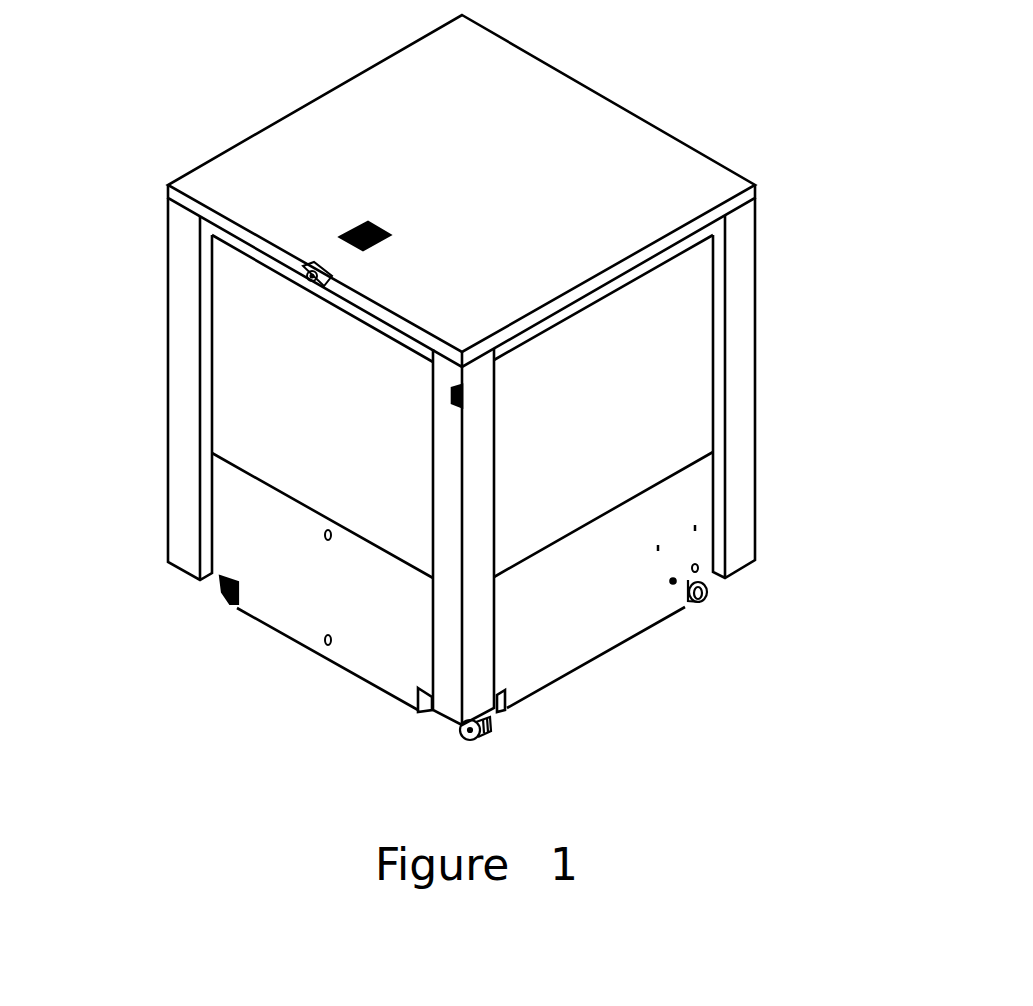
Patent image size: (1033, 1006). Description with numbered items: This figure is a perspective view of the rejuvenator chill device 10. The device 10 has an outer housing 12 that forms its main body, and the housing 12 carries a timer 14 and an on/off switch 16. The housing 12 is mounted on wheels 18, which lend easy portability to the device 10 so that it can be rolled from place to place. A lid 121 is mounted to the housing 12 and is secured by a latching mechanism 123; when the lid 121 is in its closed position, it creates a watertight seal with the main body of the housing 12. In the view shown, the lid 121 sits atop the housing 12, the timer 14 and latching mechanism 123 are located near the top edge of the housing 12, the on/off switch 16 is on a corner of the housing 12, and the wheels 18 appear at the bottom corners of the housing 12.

The rejuvenator chill device 10 is at (458, 377).
The outer housing 12 is at (190, 464).
The timer 14 is at (340, 237).
The on/off switch 16 is at (452, 400).
The wheels 18 is at (495, 730).
The lid 121 is at (490, 150).
The latching mechanism 123 is at (305, 280).